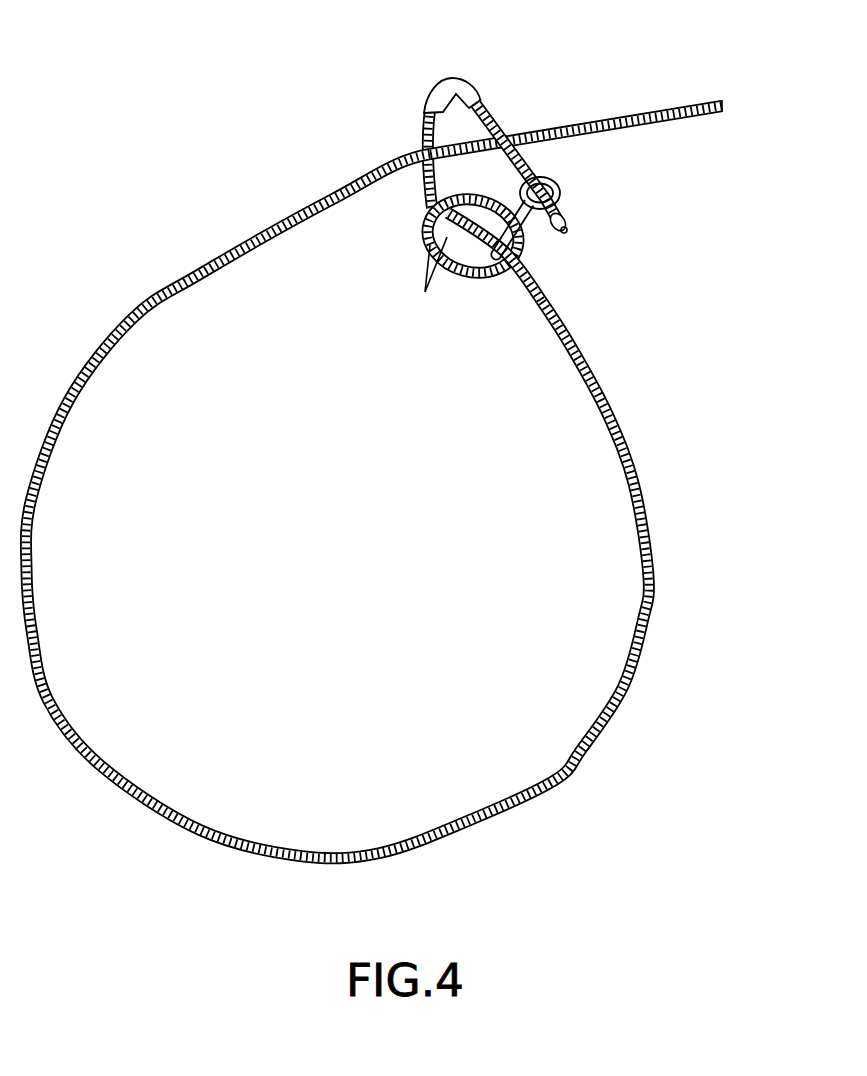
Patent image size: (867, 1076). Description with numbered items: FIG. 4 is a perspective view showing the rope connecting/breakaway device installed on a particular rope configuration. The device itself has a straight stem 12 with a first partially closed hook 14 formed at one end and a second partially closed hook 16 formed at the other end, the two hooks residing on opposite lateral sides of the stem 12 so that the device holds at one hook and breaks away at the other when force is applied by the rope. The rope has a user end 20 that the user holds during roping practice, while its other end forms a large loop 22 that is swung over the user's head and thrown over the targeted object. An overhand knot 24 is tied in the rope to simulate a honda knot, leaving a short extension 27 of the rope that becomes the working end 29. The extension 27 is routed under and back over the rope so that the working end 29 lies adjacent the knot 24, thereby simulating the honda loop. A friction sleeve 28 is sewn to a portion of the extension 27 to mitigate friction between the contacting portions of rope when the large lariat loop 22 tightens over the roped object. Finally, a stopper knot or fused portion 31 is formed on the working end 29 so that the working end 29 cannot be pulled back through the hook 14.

The stem 12 is at (540, 218).
The first partially closed hook 14 is at (561, 184).
The second partially closed hook 16 is at (510, 270).
The user end 20 is at (685, 106).
The large loop 22 is at (137, 312).
The overhand knot 24 is at (466, 259).
The extension of the rope 27 is at (488, 117).
The friction sleeve 28 is at (452, 88).
The working end 29 is at (563, 207).
The stopper knot or fused portion 31 is at (567, 230).